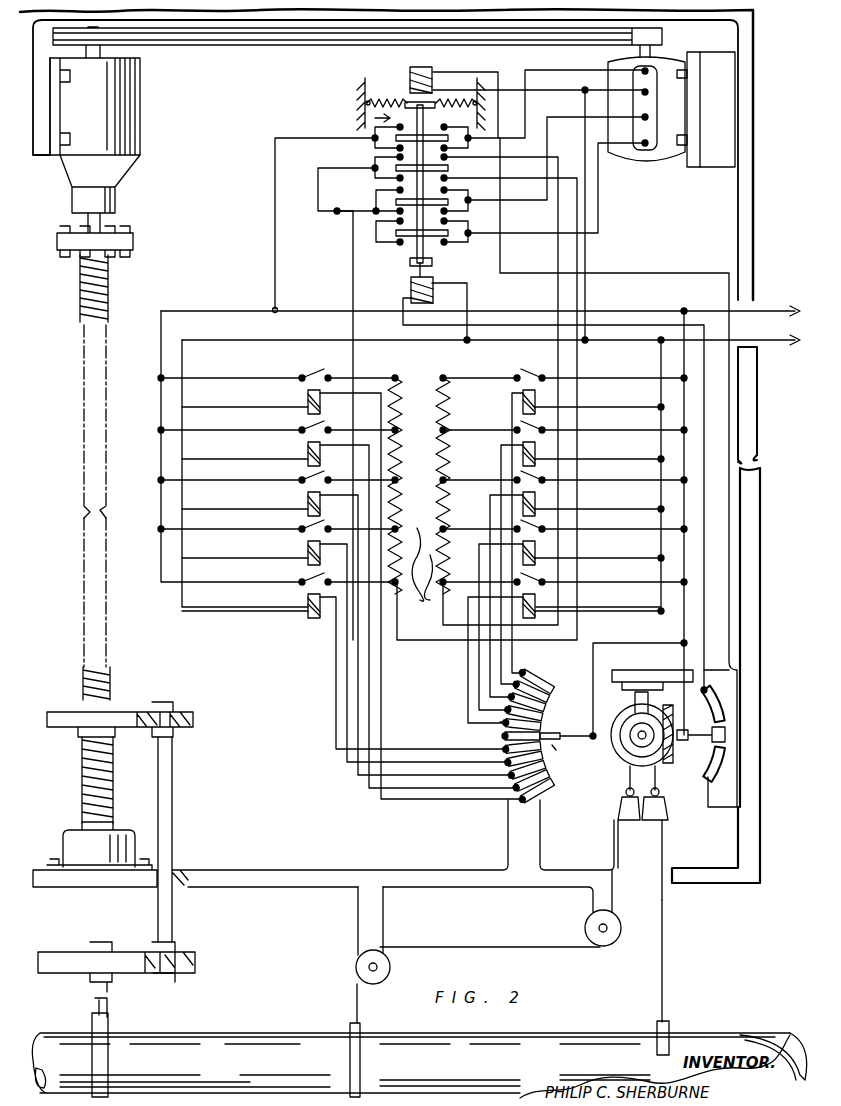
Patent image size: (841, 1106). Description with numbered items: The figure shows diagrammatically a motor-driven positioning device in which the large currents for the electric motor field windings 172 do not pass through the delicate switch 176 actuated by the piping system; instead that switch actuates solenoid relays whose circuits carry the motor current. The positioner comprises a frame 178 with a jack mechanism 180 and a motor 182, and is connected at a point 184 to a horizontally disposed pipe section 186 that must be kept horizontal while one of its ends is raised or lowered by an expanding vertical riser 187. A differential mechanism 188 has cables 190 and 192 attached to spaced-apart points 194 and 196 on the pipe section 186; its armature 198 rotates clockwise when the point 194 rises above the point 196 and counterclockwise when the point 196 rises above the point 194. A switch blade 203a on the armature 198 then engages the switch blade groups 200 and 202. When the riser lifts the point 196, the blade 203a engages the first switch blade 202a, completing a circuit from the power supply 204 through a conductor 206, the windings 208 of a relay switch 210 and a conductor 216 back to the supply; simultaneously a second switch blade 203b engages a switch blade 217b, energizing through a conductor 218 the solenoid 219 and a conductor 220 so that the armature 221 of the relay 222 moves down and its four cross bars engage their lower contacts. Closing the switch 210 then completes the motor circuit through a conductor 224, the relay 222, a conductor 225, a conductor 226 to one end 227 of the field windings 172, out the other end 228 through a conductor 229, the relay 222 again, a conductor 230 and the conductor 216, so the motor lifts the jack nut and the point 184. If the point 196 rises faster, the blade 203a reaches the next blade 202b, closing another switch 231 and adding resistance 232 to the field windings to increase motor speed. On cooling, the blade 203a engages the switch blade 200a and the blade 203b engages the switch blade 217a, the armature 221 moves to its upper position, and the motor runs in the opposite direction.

The electric motor field windings 172 is at (650, 152).
The switch 176 is at (562, 792).
The frame 178 is at (748, 800).
The jack mechanism 180 is at (160, 672).
The motor 182 is at (705, 118).
The connection point 184 is at (95, 1040).
The horizontal pipe section 186 is at (300, 1035).
The vertical riser 187 is at (800, 1040).
The differential mechanism 188 is at (681, 784).
The cable 190 is at (540, 945).
The cable 192 is at (662, 947).
The point 194 is at (360, 1027).
The point 196 is at (670, 1028).
The armature 198 is at (643, 785).
The switch blade group 200 is at (575, 672).
The switch blade 200a is at (500, 722).
The switch blade group 202 is at (525, 812).
The switch blade 202a is at (508, 750).
The switch blade 202b is at (555, 748).
The switch blade 203a is at (545, 730).
The switch blade 203b is at (728, 733).
The power supply 204 is at (491, 330).
The conductor 206 is at (688, 408).
The relay windings 208 is at (316, 612).
The relay switch 210 is at (302, 582).
The conductor 216 is at (513, 343).
The switch blade 217a is at (722, 760).
The switch blade 217b is at (722, 700).
The conductor 218 is at (706, 528).
The solenoid 219 is at (435, 280).
The conductor 220 is at (467, 297).
The armature 221 is at (414, 262).
The relay 222 is at (372, 118).
The conductor 224 is at (548, 180).
The conductor 225 is at (333, 170).
The conductor 226 is at (548, 201).
The end of motor field windings 227 is at (646, 109).
The end of motor field windings 228 is at (632, 165).
The conductor 229 is at (596, 240).
The conductor 230 is at (353, 268).
The switch 231 is at (302, 529).
The resistance 232 is at (416, 578).